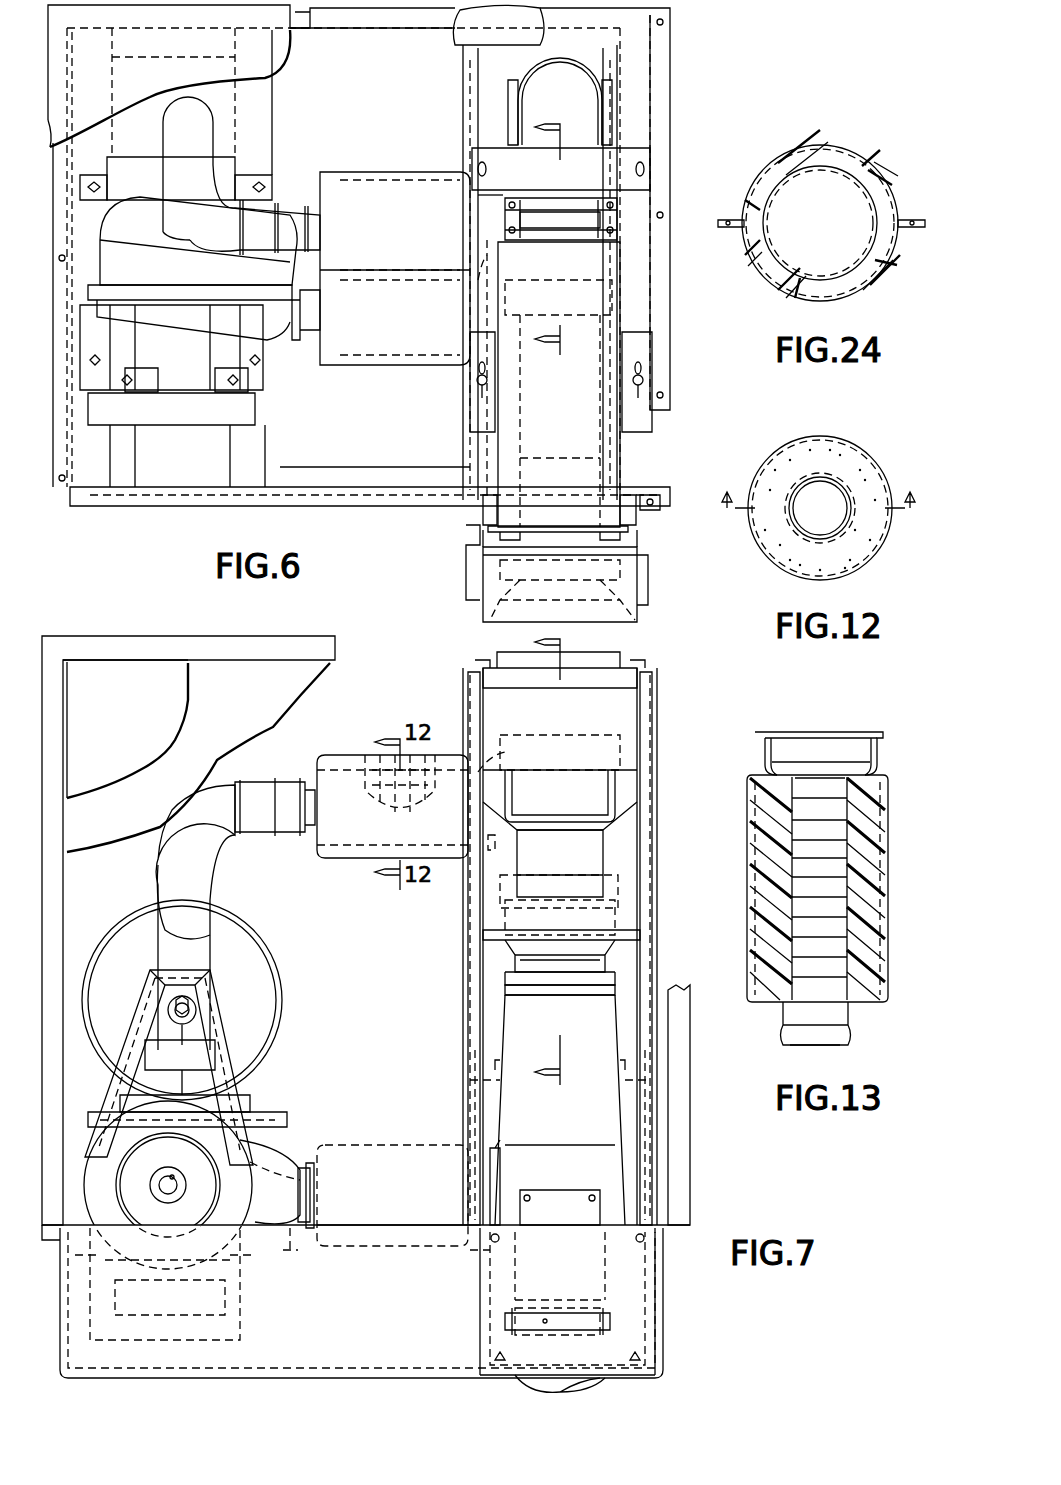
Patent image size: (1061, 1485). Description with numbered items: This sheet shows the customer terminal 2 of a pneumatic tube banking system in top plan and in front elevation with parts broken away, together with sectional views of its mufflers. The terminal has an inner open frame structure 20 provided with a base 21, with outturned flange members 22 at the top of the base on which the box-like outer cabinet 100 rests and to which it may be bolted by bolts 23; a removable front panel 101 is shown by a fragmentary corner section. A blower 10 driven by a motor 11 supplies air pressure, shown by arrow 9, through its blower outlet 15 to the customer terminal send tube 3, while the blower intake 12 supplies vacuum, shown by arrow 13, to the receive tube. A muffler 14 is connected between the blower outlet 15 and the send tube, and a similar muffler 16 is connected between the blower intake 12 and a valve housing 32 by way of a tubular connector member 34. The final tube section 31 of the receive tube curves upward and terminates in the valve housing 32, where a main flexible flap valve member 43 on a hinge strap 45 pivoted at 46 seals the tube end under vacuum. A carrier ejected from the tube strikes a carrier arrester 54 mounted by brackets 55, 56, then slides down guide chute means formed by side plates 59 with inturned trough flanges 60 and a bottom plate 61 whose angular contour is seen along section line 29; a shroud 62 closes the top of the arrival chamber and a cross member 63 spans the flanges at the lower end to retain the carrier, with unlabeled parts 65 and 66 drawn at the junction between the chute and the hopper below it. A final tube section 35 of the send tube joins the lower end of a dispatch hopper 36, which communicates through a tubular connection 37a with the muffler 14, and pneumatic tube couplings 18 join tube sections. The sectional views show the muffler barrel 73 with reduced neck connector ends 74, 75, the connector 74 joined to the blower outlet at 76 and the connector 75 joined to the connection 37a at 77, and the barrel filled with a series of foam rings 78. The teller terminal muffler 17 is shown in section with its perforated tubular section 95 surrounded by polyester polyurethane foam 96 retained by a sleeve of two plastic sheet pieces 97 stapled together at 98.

In FIG. 6, the customer terminal 2 is at (708, 53).
In FIG. 7, the customer terminal 2 is at (706, 1182).
In FIG. 7, the customer terminal send tube 3 is at (616, 1383).
In FIG. 7, the air pressure arrow 9 is at (289, 1188).
In FIG. 6, the blower 10 is at (118, 265).
In FIG. 7, the blower 10 is at (248, 975).
In FIG. 6, the motor 11 is at (123, 210).
In FIG. 7, the motor 11 is at (118, 1183).
In FIG. 6, the blower intake 12 is at (205, 132).
In FIG. 7, the blower intake 12 is at (190, 885).
In FIG. 12, the vacuum arrow 13 is at (818, 513).
In FIG. 7, the vacuum arrow 13 is at (212, 810).
In FIG. 6, the muffler 14 is at (380, 400).
In FIG. 7, the muffler 14 is at (387, 1154).
In FIG. 6, the blower outlet 15 is at (302, 335).
In FIG. 7, the blower outlet 15 is at (290, 1250).
In FIG. 6, the muffler 16 is at (368, 191).
In FIG. 7, the muffler 16 is at (342, 849).
In FIG. 24, the teller terminal muffler 17 is at (866, 140).
In FIG. 7, the pneumatic tube coupling 18 is at (625, 1325).
In FIG. 6, the inner open frame structure 20 is at (470, 80).
In FIG. 7, the inner open frame structure 20 is at (475, 1005).
In FIG. 6, the base 21 is at (368, 485).
In FIG. 7, the base 21 is at (380, 1307).
In FIG. 6, the outturned flange members 22 is at (122, 500).
In FIG. 7, the outturned flange members 22 is at (350, 1235).
In FIG. 7, the bolts 23 is at (52, 1240).
In FIG. 7, the section line 29- 29 is at (563, 858).
In FIG. 6, the final tube section 31 is at (560, 101).
In FIG. 6, the valve housing 32 is at (500, 193).
In FIG. 7, the valve housing 32 is at (575, 733).
In FIG. 6, the tubular connector member 34 is at (485, 255).
In FIG. 7, the tubular connector member 34 is at (505, 752).
In FIG. 7, the final tube section 35 is at (600, 1305).
In FIG. 6, the dispatch hopper 36 is at (483, 572).
In FIG. 7, the dispatch hopper 36 is at (595, 1025).
In FIG. 7, the tubular connection 37a is at (508, 1204).
In FIG. 7, the main flexible flap valve member 43 is at (560, 796).
In FIG. 6, the hinge strap 45 is at (557, 228).
In FIG. 6, the pivot 46 is at (565, 200).
In FIG. 6, the carrier arrester 54 is at (563, 530).
In FIG. 6, the bracket 55 is at (630, 520).
In FIG. 6, the bracket 56 is at (490, 542).
In FIG. 6, the side plates 59 is at (640, 570).
In FIG. 7, the side plates 59 is at (475, 705).
In FIG. 6, the inturned trough flanges 60 is at (510, 600).
In FIG. 7, the inturned trough flanges 60 is at (625, 820).
In FIG. 7, the bottom plate 61 is at (585, 853).
In FIG. 6, the shroud 62 is at (561, 384).
In FIG. 7, the shroud 62 is at (605, 660).
In FIG. 7, the cross member 63 is at (561, 951).
In FIG. 7, the flange 65 is at (515, 958).
In FIG. 7, the gasket 66 is at (537, 985).
In FIG. 12, the tubular molded plastic barrel 73 is at (860, 460).
In FIG. 13, the tubular molded plastic barrel 73 is at (888, 900).
In FIG. 7, the tubular molded plastic barrel 73 is at (350, 765).
In FIG. 12, the tube connector end 74 is at (795, 540).
In FIG. 13, the tube connector end 74 is at (805, 1020).
In FIG. 13, the tube connector end 75 is at (868, 750).
In FIG. 7, the connection 76 is at (312, 1183).
In FIG. 7, the connection 77 is at (487, 1142).
In FIG. 12, the foam rings 78 is at (795, 470).
In FIG. 13, the foam rings 78 is at (870, 828).
In FIG. 7, the foam rings 78 is at (410, 790).
In FIG. 24, the perforated tubular section 95 is at (775, 185).
In FIG. 24, the polyester polyurethane foam 96 is at (790, 158).
In FIG. 24, the plastic sheet material sleeve pieces 97 is at (765, 168).
In FIG. 24, the staples 98 is at (910, 218).
In FIG. 6, the outer cabinet 100 is at (48, 125).
In FIG. 7, the outer cabinet 100 is at (262, 688).
In FIG. 7, the removable front panel 101 is at (120, 688).